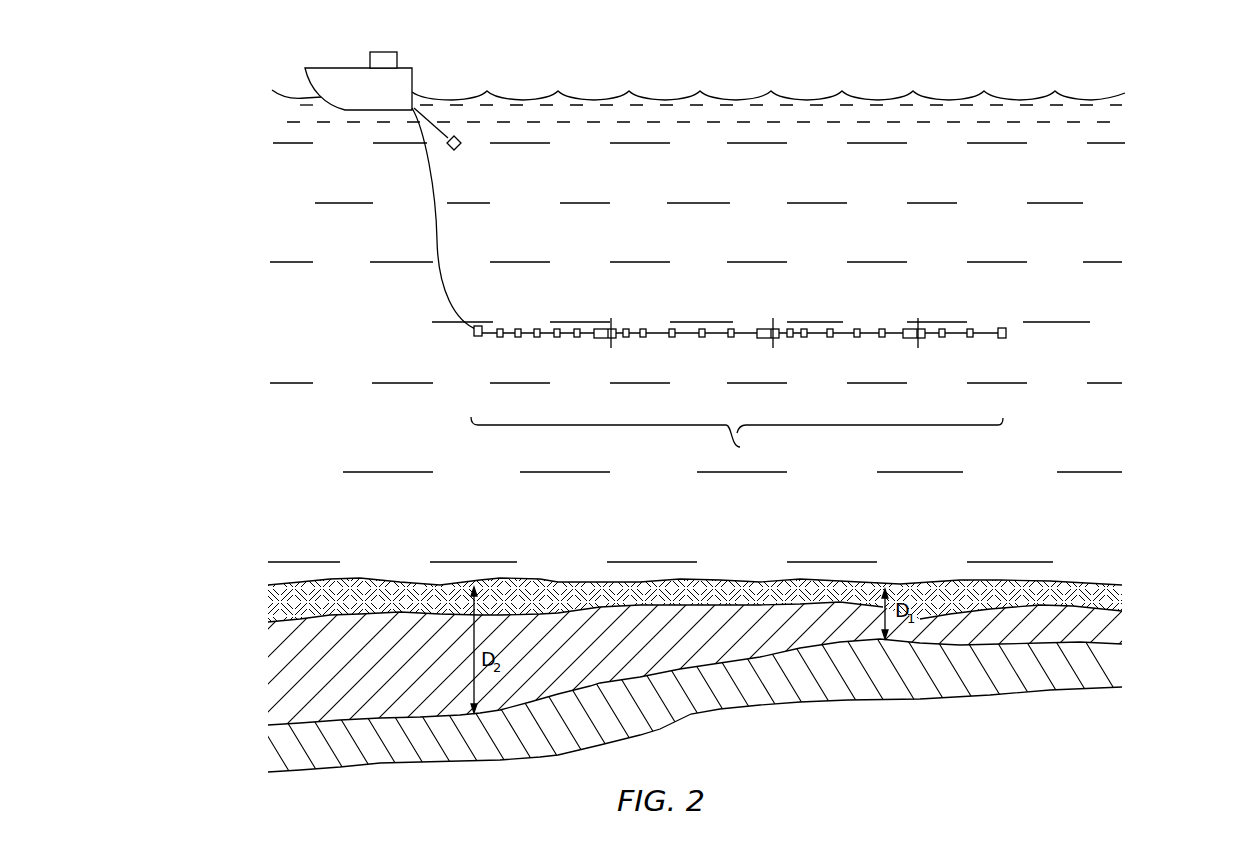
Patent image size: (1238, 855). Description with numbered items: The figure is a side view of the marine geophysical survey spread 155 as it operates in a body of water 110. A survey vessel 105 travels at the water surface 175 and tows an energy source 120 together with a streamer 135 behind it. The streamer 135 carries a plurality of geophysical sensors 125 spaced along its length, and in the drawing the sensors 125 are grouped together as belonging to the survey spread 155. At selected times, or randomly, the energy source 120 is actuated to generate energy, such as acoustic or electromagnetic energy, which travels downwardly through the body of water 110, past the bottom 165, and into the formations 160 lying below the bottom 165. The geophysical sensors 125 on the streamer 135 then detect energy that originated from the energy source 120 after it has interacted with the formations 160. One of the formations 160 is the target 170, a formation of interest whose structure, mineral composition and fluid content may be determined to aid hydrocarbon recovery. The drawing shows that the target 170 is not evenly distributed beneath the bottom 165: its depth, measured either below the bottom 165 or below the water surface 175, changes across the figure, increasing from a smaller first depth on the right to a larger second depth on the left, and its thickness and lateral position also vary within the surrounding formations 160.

The survey vessel 105 is at (413, 74).
The body of water 110 is at (829, 176).
The energy source 120 is at (461, 143).
The geophysical sensors 125 is at (500, 338).
The streamer 135 is at (750, 331).
The survey spread 155 is at (740, 447).
The formations 160 is at (1105, 660).
The bottom 165 is at (380, 580).
The target 170 is at (904, 691).
The water surface 175 is at (887, 100).